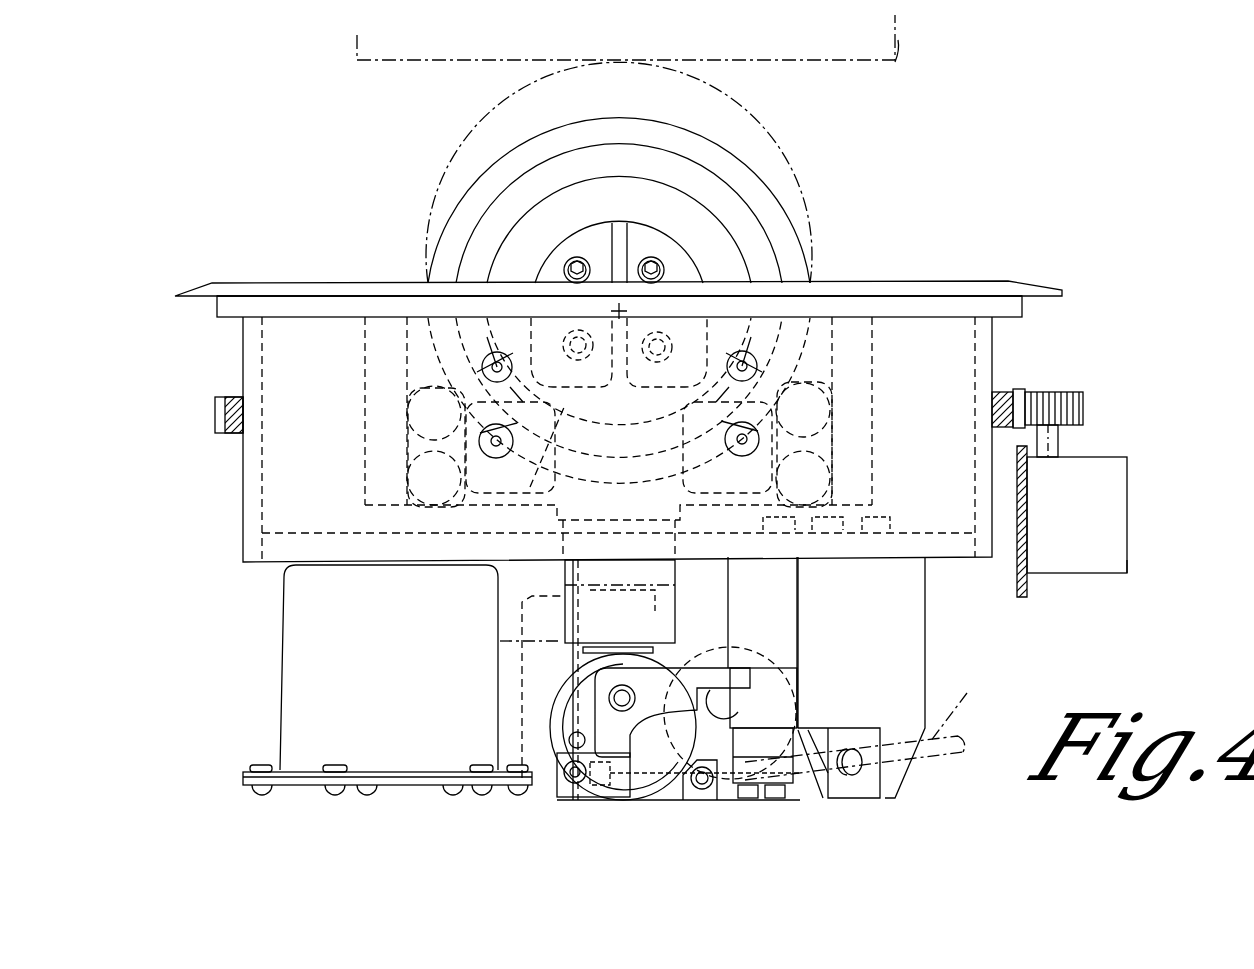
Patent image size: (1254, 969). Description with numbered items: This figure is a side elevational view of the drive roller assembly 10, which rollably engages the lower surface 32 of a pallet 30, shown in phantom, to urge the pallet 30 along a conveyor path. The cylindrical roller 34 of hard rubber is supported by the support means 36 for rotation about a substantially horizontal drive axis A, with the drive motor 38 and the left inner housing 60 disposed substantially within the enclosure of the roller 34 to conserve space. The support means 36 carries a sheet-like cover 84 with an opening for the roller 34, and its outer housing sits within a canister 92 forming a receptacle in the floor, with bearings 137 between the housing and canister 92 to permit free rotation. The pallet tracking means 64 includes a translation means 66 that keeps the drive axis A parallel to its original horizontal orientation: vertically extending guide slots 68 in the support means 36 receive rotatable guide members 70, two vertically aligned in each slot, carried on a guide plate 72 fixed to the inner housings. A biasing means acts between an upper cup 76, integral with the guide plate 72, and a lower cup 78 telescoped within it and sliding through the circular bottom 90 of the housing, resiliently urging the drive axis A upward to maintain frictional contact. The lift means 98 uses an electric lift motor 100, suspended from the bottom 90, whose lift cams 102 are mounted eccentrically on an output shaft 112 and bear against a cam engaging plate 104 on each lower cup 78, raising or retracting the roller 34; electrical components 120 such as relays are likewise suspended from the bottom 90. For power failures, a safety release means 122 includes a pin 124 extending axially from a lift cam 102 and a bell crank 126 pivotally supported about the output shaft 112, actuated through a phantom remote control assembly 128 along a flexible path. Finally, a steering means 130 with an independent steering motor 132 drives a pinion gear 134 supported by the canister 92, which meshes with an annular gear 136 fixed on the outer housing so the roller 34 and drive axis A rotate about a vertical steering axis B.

The drive roller assembly 10 is at (885, 200).
The pallet 30 is at (900, 62).
The lower surface 32 is at (760, 62).
The cylindrical roller 34 is at (483, 172).
The support means 36 is at (1062, 283).
The drive motor 38 is at (725, 218).
The left inner housing 60 is at (510, 242).
The pallet tracking means 64 is at (690, 580).
The translation means 66 is at (832, 398).
The guide slots 68 is at (408, 352).
The guide members 70 is at (418, 465).
The guide plate 72 is at (700, 268).
The upper cup 76 is at (530, 487).
The lower cup 78 is at (565, 582).
The cover 84 is at (930, 280).
The bottom 90 is at (938, 562).
The canister 92 is at (1027, 590).
The lift means 98 is at (682, 805).
The lift motor 100 is at (548, 640).
The lift cam 102 is at (555, 641).
The cam engaging plate 104 is at (600, 648).
The output shaft 112 is at (609, 698).
The electrical components 120 is at (285, 642).
The safety release means 122 is at (553, 800).
The pin 124 is at (577, 740).
The bell crank 126 is at (752, 678).
The remote control assembly 128 is at (880, 729).
The steering means 130 is at (1130, 490).
The steering motor 132 is at (1115, 565).
The pinion gear 134 is at (1075, 392).
The annular gear 136 is at (225, 397).
The bearings 137 is at (1025, 304).
The drive axis A is at (622, 305).
The steering axis B is at (619, 60).